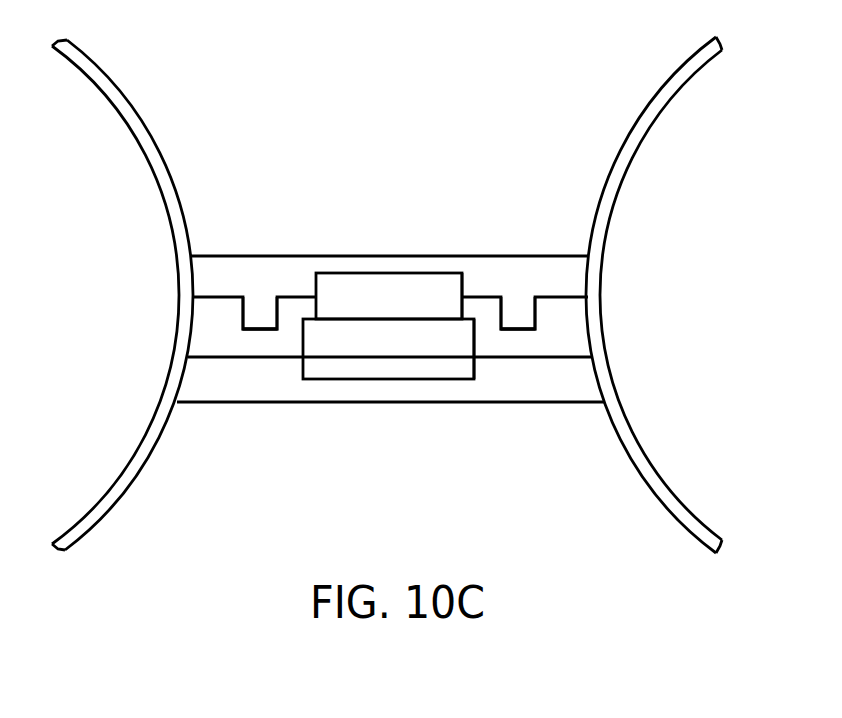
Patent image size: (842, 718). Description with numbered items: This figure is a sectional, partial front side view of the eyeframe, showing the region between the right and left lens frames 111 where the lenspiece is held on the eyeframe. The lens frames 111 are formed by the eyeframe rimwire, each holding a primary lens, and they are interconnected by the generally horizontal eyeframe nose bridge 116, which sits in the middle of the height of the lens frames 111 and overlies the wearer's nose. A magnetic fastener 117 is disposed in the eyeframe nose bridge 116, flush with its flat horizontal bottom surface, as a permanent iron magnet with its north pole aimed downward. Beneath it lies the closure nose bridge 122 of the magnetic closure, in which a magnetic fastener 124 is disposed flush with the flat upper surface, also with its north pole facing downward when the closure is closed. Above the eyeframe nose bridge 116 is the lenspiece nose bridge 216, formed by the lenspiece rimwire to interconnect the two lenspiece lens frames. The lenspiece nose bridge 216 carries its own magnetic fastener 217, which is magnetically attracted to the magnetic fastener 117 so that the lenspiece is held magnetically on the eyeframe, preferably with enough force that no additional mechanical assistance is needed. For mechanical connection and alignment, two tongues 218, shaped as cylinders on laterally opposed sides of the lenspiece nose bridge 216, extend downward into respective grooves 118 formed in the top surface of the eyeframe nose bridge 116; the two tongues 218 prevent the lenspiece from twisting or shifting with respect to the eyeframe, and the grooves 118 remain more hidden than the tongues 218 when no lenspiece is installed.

The lens frame 111 is at (640, 128).
The eyeframe nose bridge 116 is at (215, 312).
The magnetic fastener 117 is at (476, 350).
The groove 118 is at (255, 333).
The closure nose bridge 122 is at (251, 398).
The magnetic fastener 124 is at (434, 376).
The lenspiece nose bridge 216 is at (396, 262).
The magnetic fastener 217 is at (462, 283).
The tongue 218 is at (255, 302).